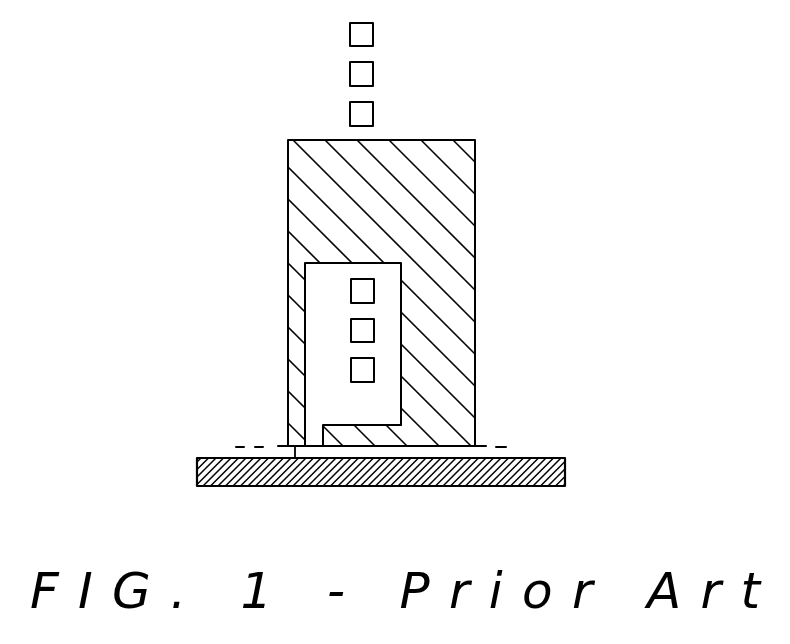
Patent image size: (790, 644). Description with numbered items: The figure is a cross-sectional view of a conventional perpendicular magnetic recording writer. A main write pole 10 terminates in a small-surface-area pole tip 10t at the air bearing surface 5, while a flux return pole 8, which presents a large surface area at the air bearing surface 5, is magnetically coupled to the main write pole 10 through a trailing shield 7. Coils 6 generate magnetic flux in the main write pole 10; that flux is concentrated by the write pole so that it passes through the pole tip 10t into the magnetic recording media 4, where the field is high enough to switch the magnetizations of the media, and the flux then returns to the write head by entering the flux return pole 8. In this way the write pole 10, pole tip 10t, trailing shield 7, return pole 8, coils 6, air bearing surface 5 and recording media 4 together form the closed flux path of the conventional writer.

The magnetic recording media 4 is at (215, 467).
The air bearing surface 5 is at (372, 449).
The coils 6 is at (360, 291).
The trailing shield 7 is at (463, 332).
The flux return pole 8 is at (385, 437).
The main write pole 10 is at (295, 419).
The pole tip 10t is at (296, 460).